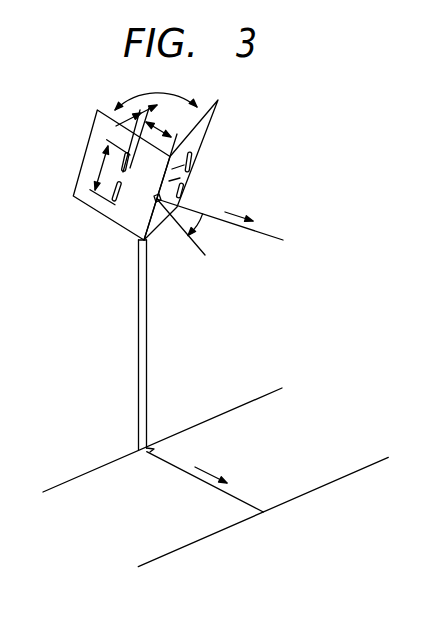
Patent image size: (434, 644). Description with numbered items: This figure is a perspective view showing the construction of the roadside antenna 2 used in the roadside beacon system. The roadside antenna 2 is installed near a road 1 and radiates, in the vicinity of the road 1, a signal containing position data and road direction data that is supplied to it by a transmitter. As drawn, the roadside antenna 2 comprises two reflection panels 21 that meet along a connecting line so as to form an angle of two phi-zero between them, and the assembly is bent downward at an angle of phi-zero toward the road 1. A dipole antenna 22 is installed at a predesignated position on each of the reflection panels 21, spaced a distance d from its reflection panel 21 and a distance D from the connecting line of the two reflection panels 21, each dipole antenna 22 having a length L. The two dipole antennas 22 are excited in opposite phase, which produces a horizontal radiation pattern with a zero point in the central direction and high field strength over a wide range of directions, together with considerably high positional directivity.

The road 1 is at (245, 515).
The roadside antenna 2 is at (176, 171).
The reflection panel 21 is at (95, 146).
The dipole antenna 22 is at (126, 176).